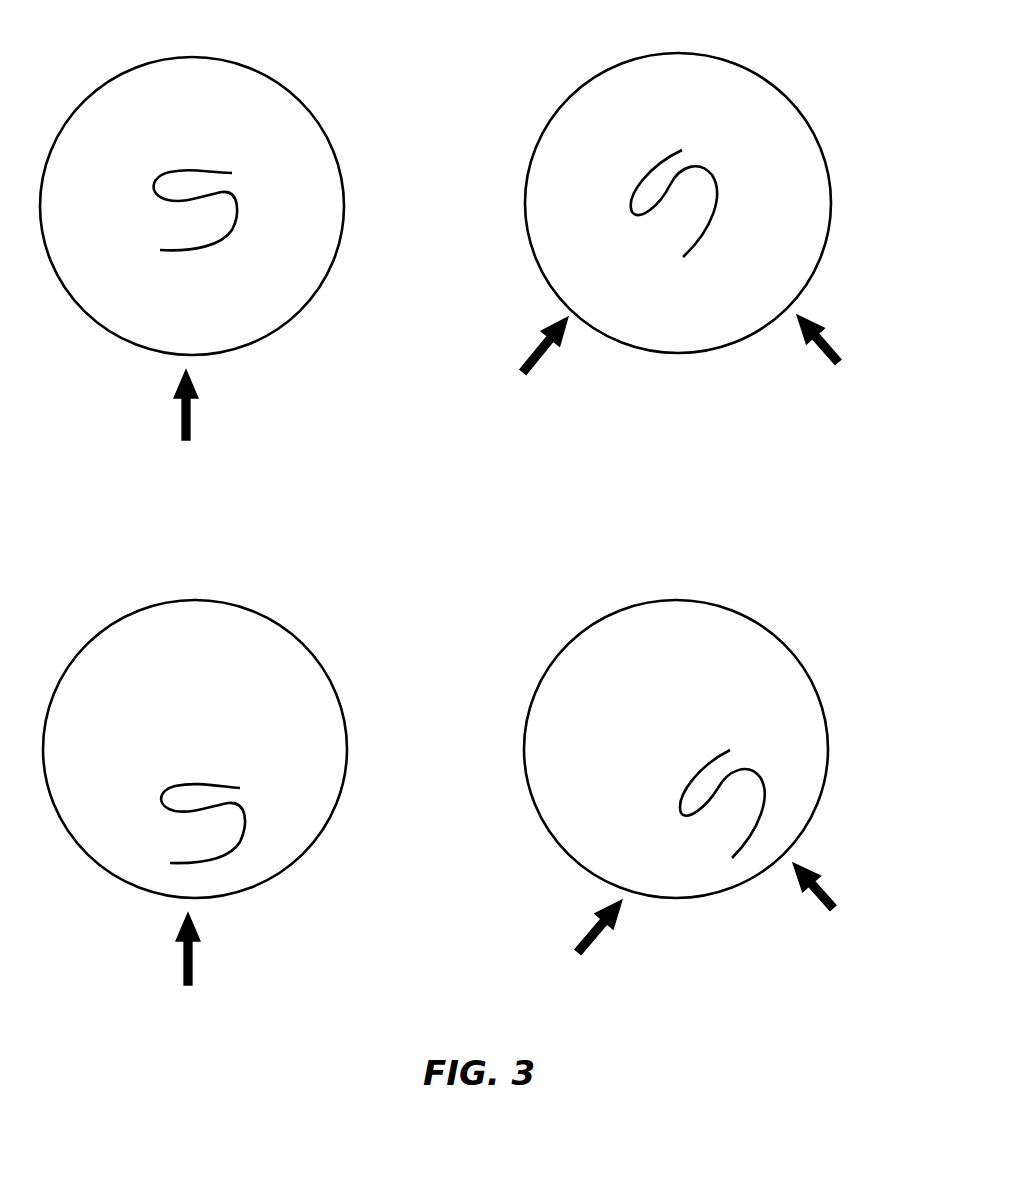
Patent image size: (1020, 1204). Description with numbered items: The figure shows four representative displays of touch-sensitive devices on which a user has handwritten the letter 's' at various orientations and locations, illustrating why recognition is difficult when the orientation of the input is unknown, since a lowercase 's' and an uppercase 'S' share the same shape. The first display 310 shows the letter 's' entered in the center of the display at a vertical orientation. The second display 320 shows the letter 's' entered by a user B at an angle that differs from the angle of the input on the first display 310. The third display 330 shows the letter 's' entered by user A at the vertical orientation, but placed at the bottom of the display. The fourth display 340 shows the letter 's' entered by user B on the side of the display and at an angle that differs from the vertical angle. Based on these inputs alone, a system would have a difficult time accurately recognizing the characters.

The first display 310 is at (325, 89).
The second display 320 is at (814, 94).
The third display 330 is at (325, 636).
The fourth display 340 is at (814, 640).